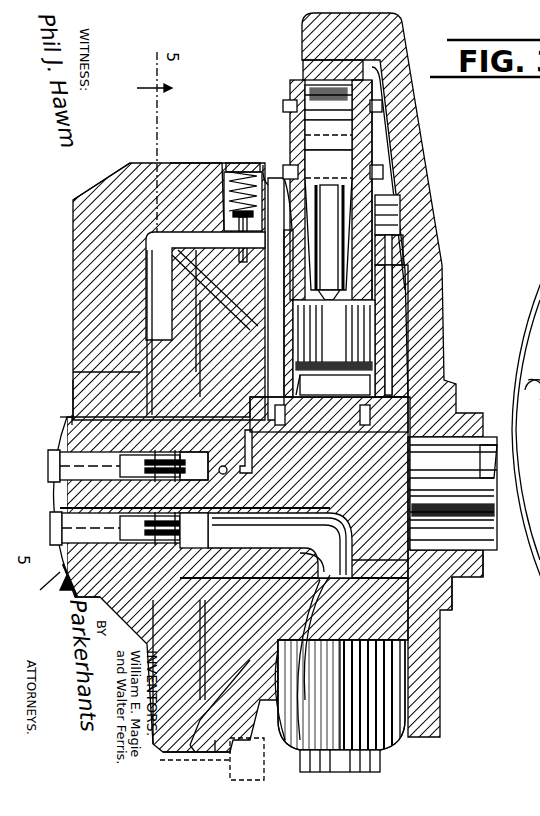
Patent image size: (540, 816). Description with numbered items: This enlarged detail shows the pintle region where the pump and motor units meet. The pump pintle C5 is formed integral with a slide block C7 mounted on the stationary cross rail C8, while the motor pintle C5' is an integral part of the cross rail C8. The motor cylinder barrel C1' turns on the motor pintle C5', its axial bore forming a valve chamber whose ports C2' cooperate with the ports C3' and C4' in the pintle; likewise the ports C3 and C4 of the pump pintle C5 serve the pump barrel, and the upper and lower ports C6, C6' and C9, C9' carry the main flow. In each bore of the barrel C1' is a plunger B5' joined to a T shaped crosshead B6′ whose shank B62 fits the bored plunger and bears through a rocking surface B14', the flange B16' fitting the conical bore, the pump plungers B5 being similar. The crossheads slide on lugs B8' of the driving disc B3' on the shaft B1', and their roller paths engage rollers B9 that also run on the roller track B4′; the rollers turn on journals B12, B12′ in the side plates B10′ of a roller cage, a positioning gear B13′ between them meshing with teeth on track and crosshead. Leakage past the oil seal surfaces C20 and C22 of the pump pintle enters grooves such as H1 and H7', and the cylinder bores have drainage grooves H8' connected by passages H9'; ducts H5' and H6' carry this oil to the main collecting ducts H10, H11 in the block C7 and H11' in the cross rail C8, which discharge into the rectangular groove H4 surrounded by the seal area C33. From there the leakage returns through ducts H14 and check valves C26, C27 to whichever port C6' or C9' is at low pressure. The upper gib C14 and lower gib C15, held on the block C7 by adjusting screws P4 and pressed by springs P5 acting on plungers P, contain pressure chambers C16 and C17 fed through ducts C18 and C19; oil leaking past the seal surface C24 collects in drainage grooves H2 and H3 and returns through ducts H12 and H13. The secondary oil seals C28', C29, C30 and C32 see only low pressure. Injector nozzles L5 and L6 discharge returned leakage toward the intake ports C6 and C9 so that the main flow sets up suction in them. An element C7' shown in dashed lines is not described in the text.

The slide block C7 is at (169, 272).
The oil seal surface C24 is at (146, 178).
The pressure chamber C16 is at (198, 180).
The secondary oil seal C28' is at (245, 200).
The upper gib C14 is at (222, 165).
The adjusting screw P4 is at (263, 180).
The secondary oil seal C30 is at (148, 240).
The drainage groove H2 is at (175, 265).
The cross rail C8 is at (150, 290).
The duct C18 is at (155, 318).
The duct H12 is at (198, 345).
The main leakage collecting duct H10 is at (70, 415).
The secondary oil seal C29 is at (73, 395).
The rectangular groove H4 is at (66, 415).
The secondary oil seal area C33 is at (106, 381).
The upper port C6' is at (180, 370).
The plunger P is at (272, 292).
The spring P5 is at (292, 306).
The upper port C6 is at (237, 574).
The injector nozzle L5 is at (52, 450).
The injector nozzle L6 is at (52, 537).
The port C3 is at (109, 461).
The pump pintle C5 is at (108, 469).
The port C4 is at (108, 524).
The check valve C26 is at (254, 470).
The oil seal surface C22 is at (312, 508).
The check valve C27 is at (294, 533).
The port C4' is at (280, 545).
The duct H14 is at (250, 480).
The main leakage collecting duct H11' is at (380, 539).
The main leakage collecting duct H11 is at (59, 581).
The lower port C9 is at (94, 587).
The lower port C9' is at (167, 662).
The duct C19 is at (200, 700).
The lower gib C15 is at (175, 752).
The pressure chamber C17 is at (196, 752).
The drainage groove H3 is at (215, 752).
The dashed member C7' is at (212, 759).
The roller track B4′ is at (380, 62).
The journal B12′ is at (300, 95).
The positioning gear B13′ is at (375, 107).
The side plate B10′ is at (360, 140).
The crosshead B6′ is at (355, 165).
The flange B16' is at (400, 230).
The rocking surface B14' is at (403, 278).
The lug B8' is at (430, 215).
The shank B62 is at (388, 240).
The drainage groove H8' is at (435, 315).
The passage H9' is at (429, 331).
The plunger B5 is at (429, 195).
The duct H5' is at (334, 489).
The port C2' is at (333, 532).
The oil seal surface C20 is at (380, 425).
The driving disc B3' is at (445, 587).
The port C3' is at (453, 493).
The motor pintle C5' is at (452, 495).
The shaft B1' is at (515, 430).
The motor cylinder barrel C1' is at (383, 554).
The plunger B5' is at (346, 768).
The duct H13 is at (318, 651).
The secondary oil seal C32 is at (313, 665).
The drainage groove H1 is at (289, 695).
The duct H6' is at (475, 499).
The drainage groove H7' is at (451, 506).
The roller B9 is at (530, 295).
The journal B12 is at (538, 270).